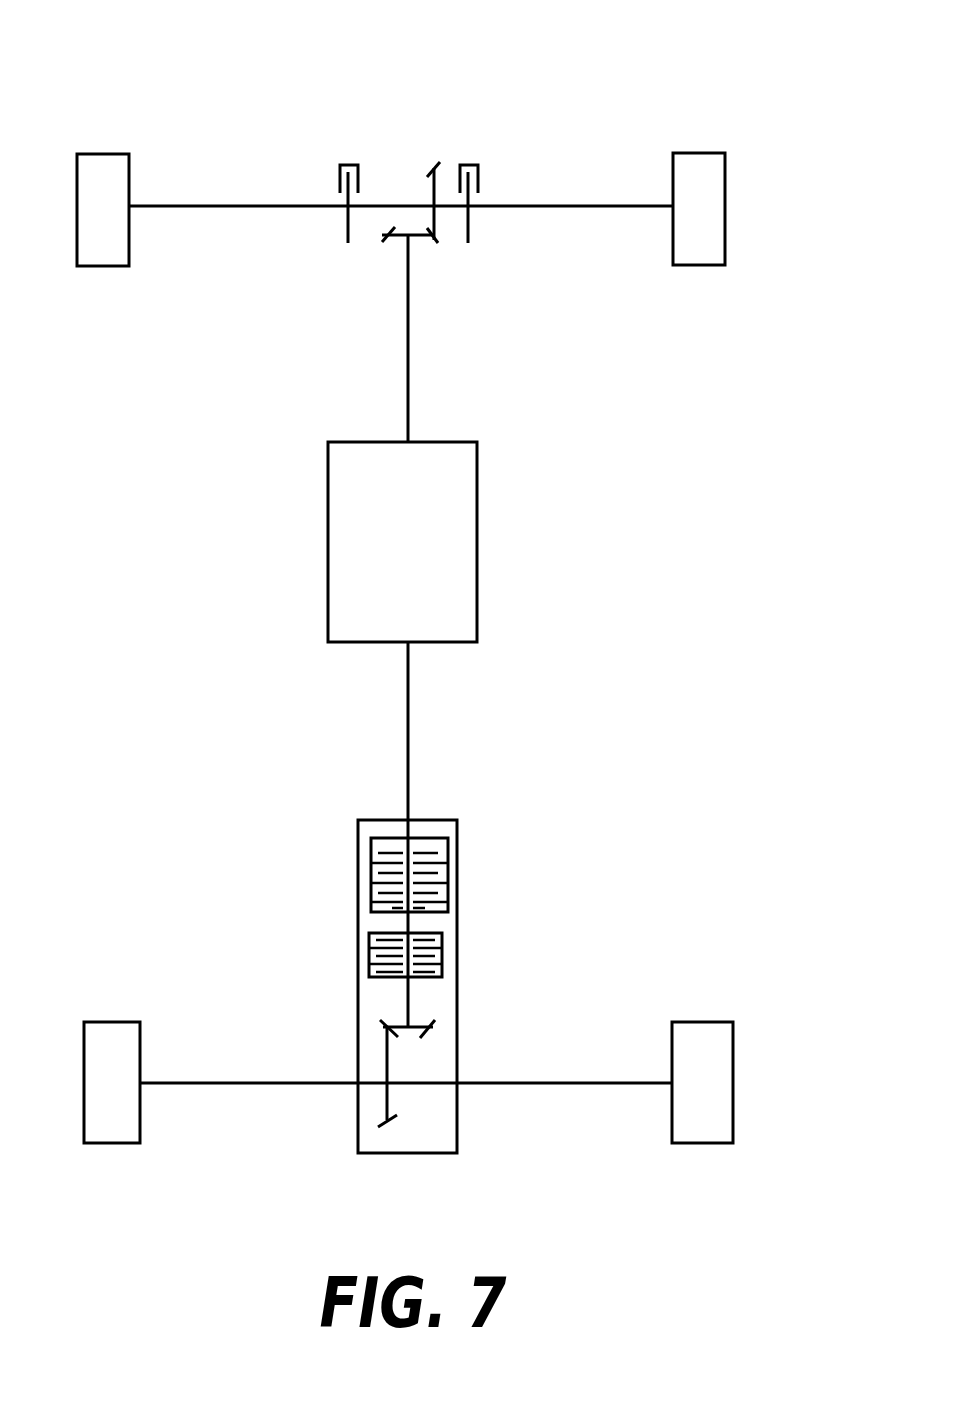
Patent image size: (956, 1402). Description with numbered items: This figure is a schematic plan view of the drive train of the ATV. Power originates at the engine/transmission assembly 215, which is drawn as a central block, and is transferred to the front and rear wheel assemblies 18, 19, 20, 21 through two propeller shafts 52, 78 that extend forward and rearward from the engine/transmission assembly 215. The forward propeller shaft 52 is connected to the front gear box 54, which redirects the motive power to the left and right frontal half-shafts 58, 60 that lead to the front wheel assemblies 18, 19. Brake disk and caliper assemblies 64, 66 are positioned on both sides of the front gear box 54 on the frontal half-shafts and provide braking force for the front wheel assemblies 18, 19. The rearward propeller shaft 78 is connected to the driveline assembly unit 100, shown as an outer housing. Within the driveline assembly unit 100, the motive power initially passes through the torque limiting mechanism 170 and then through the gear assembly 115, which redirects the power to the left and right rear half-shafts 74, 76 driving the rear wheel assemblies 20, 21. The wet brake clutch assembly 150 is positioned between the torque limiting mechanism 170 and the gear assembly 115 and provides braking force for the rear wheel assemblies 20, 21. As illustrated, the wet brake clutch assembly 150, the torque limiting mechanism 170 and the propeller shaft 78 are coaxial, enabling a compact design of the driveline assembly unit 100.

The front wheel assembly 18 is at (77, 177).
The front wheel assembly 19 is at (703, 153).
The rear wheel assembly 20 is at (112, 1022).
The rear wheel assembly 21 is at (710, 1022).
The left frontal half-shaft 58 is at (222, 206).
The right frontal half-shaft 60 is at (558, 206).
The brake disk and caliper assembly 66 is at (352, 165).
The brake disk and caliper assembly 64 is at (345, 232).
The front gear box 54 is at (430, 251).
The propeller shaft 52 is at (408, 350).
The engine/transmission assembly 215 is at (463, 505).
The propeller shaft 78 is at (408, 713).
The driveline assembly unit 100 is at (457, 957).
The torque limiting mechanism 170 is at (457, 873).
The wet brake clutch assembly 150 is at (370, 948).
The gear assembly 115 is at (368, 1052).
The left rear half-shaft 74 is at (223, 1083).
The right rear half-shaft 76 is at (537, 1083).